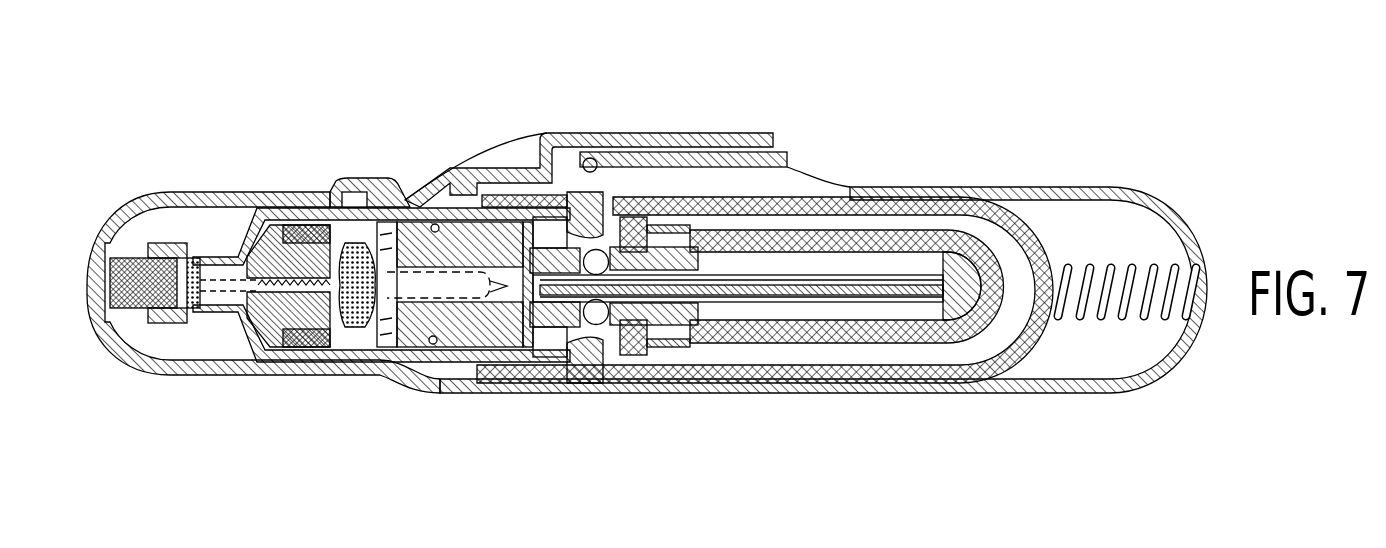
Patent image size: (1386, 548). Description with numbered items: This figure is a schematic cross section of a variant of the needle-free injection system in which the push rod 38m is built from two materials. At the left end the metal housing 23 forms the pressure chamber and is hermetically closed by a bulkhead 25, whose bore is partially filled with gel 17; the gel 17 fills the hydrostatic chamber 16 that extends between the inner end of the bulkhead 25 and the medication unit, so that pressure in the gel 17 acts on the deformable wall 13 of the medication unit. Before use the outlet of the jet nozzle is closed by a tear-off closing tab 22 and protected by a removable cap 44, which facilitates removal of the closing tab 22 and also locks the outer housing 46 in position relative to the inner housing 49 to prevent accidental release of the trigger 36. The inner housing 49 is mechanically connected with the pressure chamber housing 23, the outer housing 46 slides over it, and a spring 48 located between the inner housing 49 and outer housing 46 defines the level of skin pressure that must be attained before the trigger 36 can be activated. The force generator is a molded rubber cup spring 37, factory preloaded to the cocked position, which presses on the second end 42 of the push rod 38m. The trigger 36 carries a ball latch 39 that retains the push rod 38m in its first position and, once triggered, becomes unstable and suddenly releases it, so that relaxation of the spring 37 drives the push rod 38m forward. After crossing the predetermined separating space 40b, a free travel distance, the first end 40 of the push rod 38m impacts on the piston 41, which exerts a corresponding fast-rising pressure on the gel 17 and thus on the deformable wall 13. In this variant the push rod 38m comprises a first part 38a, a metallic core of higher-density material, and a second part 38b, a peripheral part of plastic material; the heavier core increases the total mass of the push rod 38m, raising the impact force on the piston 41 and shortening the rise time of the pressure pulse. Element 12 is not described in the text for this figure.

The valve body 12 is at (320, 366).
The deformable wall 13 is at (367, 245).
The hydrostatic chamber 16 is at (393, 205).
The gel 17 is at (392, 318).
The tear-off closing tab 22 is at (142, 308).
The housing 23 is at (240, 352).
The bulkhead 25 is at (480, 265).
The trigger 36 is at (712, 135).
The rubber cup spring 37 is at (867, 250).
The first part of push rod 38a is at (738, 302).
The second part of push rod 38b is at (797, 302).
The push rod 38m is at (868, 318).
The ball latch 39 is at (597, 312).
The first end of push rod 40 is at (573, 335).
The separating space 40b is at (543, 290).
The piston 41 is at (505, 292).
The second end of push rod 42 is at (963, 273).
The removable cap 44 is at (98, 322).
The outer housing 46 is at (1085, 193).
The spring 48 is at (1093, 320).
The inner housing 49 is at (1020, 380).